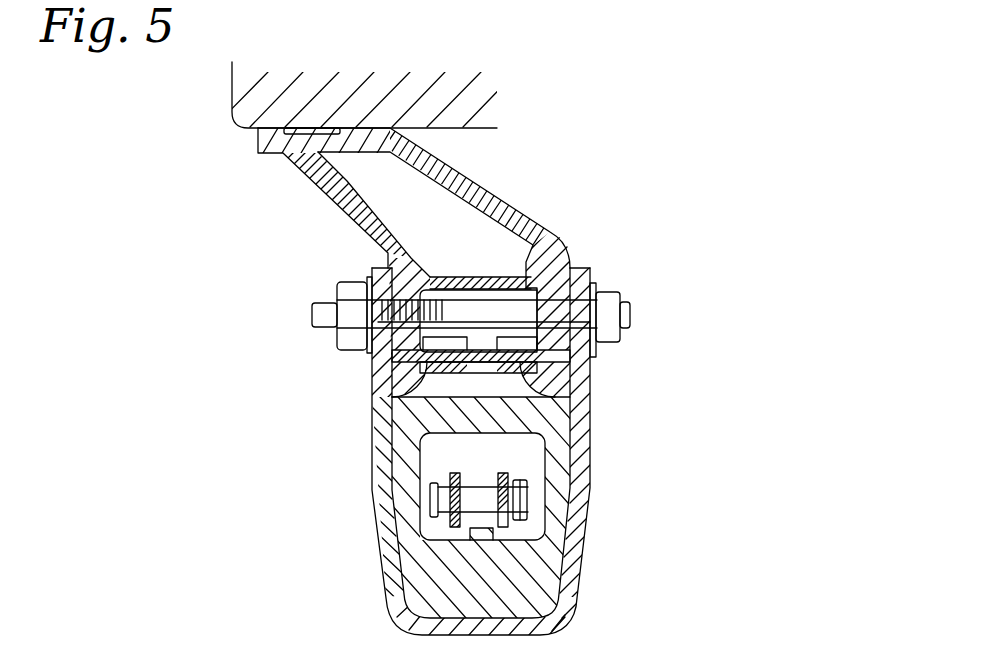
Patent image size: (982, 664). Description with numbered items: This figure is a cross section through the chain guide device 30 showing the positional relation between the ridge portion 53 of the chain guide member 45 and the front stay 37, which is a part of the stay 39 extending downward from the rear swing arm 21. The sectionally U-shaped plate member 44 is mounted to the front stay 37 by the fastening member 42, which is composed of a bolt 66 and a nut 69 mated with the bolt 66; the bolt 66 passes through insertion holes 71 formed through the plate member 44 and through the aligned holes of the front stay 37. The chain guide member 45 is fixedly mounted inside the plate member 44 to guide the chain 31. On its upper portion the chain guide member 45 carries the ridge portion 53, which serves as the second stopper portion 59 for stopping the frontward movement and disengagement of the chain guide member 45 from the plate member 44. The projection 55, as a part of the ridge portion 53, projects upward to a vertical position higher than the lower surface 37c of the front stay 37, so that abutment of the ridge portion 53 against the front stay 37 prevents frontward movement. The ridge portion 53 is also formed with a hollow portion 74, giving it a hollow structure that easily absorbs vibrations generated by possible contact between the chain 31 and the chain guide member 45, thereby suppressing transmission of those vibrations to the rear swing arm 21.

The rear swing arm 21 is at (462, 127).
The chain guide device 30 is at (795, 297).
The chain 31 is at (547, 497).
The front stay 37 is at (522, 212).
The lower surface 37c is at (372, 402).
The stay 39 is at (520, 187).
The fastening member 42 is at (282, 317).
The plate member 44 is at (583, 528).
The chain guide member 45 is at (558, 418).
The ridge portion 53 is at (530, 348).
The projection 55 is at (452, 338).
The second stopper portion 59 is at (530, 348).
The bolt 66 is at (610, 313).
The nut 69 is at (352, 348).
The insertion holes 71 is at (372, 312).
The hollow portion 74 is at (558, 393).